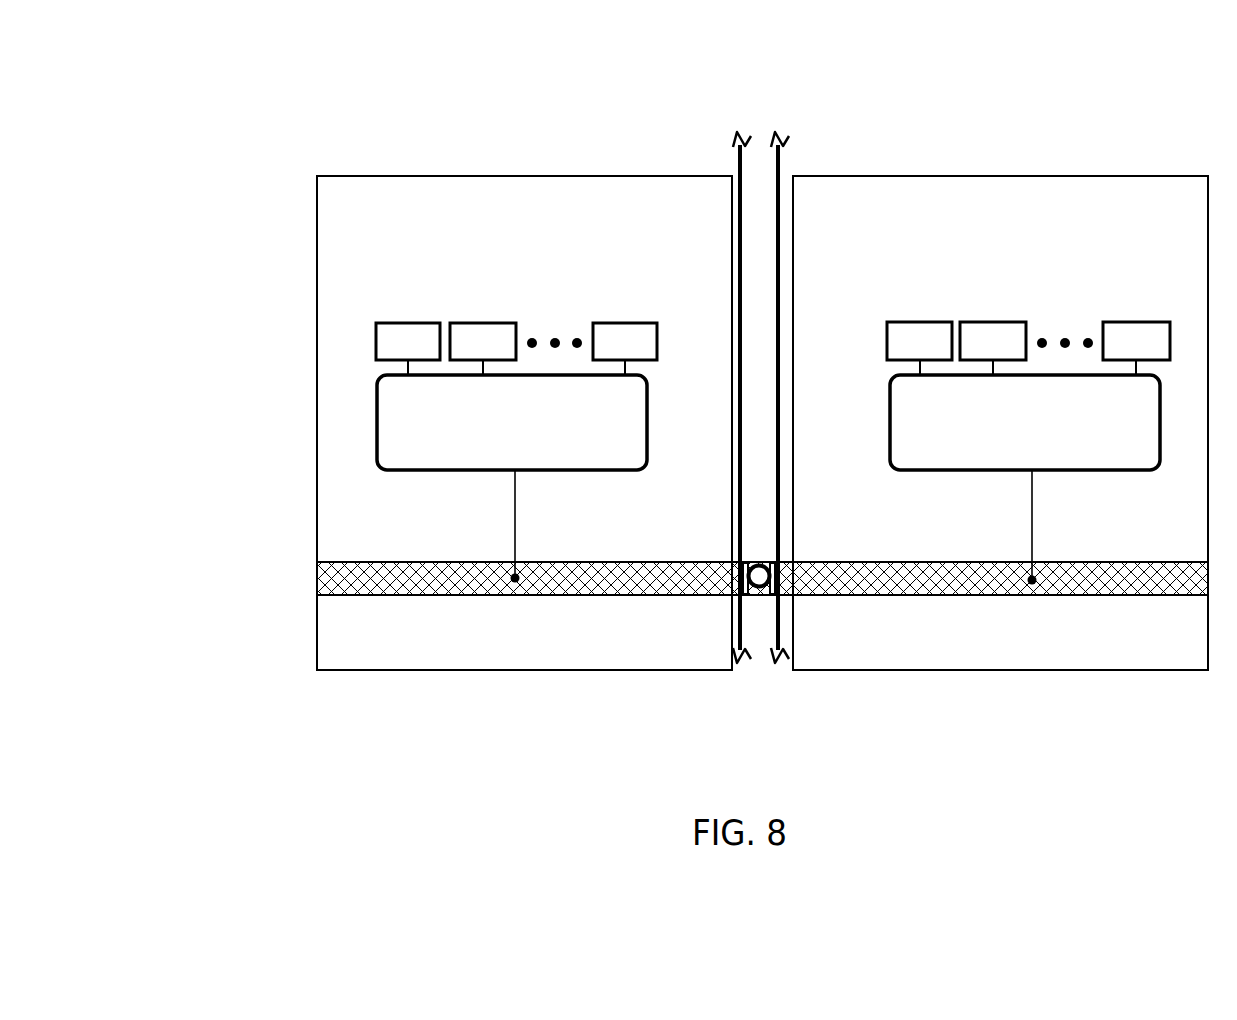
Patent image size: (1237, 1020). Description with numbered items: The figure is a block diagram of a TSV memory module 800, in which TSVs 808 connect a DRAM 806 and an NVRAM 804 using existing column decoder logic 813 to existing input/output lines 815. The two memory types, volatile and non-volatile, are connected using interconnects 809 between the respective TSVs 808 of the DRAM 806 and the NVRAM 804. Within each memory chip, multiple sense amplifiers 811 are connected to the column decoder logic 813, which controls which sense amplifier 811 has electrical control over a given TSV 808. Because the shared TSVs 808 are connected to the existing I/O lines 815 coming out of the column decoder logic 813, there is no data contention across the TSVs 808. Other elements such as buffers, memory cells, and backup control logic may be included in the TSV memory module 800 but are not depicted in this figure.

The TSV memory module 800 is at (687, 141).
The DRAM 806 is at (627, 223).
The NVRAM 804 is at (1097, 222).
The TSV 808 is at (286, 578).
The interconnect 809 is at (760, 600).
The sense amplifiers 811 is at (459, 311).
The column decoder logic 813 is at (377, 421).
The I/O lines 815 is at (564, 506).